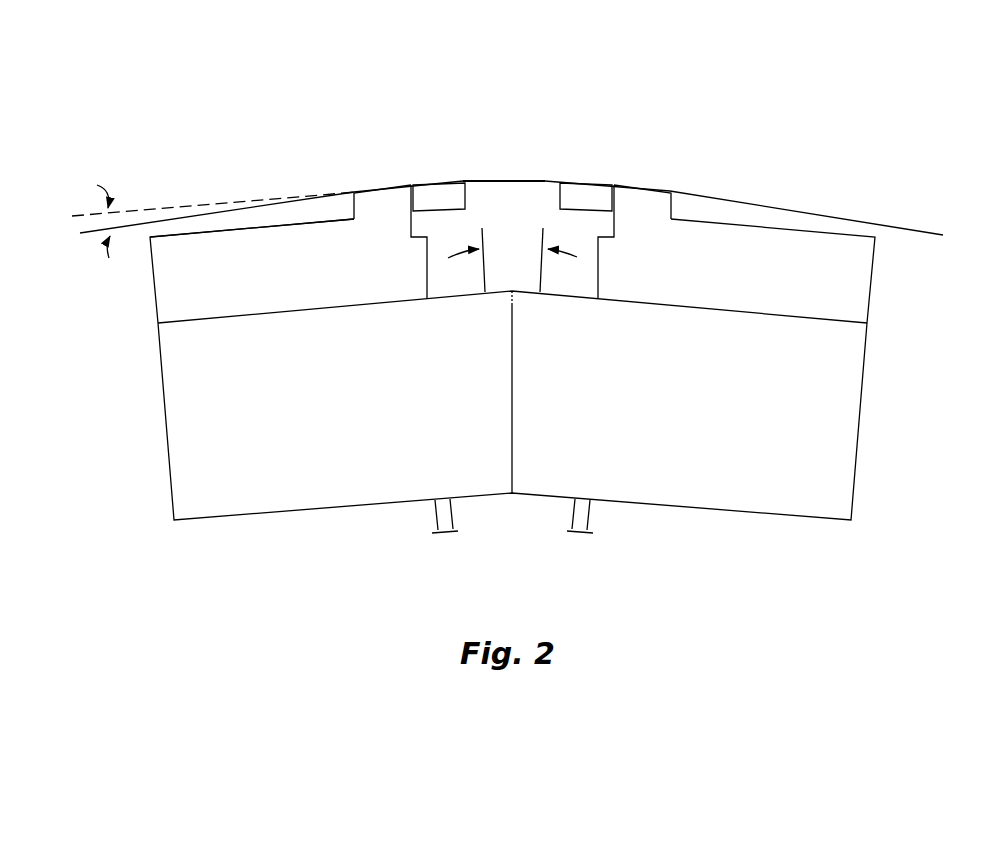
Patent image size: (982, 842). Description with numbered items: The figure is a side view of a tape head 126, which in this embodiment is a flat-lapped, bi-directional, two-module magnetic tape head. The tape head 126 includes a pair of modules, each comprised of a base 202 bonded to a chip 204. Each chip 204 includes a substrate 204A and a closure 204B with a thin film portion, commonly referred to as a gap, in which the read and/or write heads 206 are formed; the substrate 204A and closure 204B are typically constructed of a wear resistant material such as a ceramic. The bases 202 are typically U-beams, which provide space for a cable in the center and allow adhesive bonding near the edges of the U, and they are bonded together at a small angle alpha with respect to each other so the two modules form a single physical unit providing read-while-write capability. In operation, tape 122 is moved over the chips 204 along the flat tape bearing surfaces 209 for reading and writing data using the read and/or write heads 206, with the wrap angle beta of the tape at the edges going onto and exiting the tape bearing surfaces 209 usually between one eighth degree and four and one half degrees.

The tape 122 is at (777, 208).
The tape head 126 is at (212, 147).
The base 202 is at (162, 395).
The chip 204 is at (153, 285).
The substrate 204A is at (221, 260).
The closure 204B is at (558, 203).
The read and/or write heads 206 is at (414, 181).
The tape bearing surfaces 209 is at (357, 181).